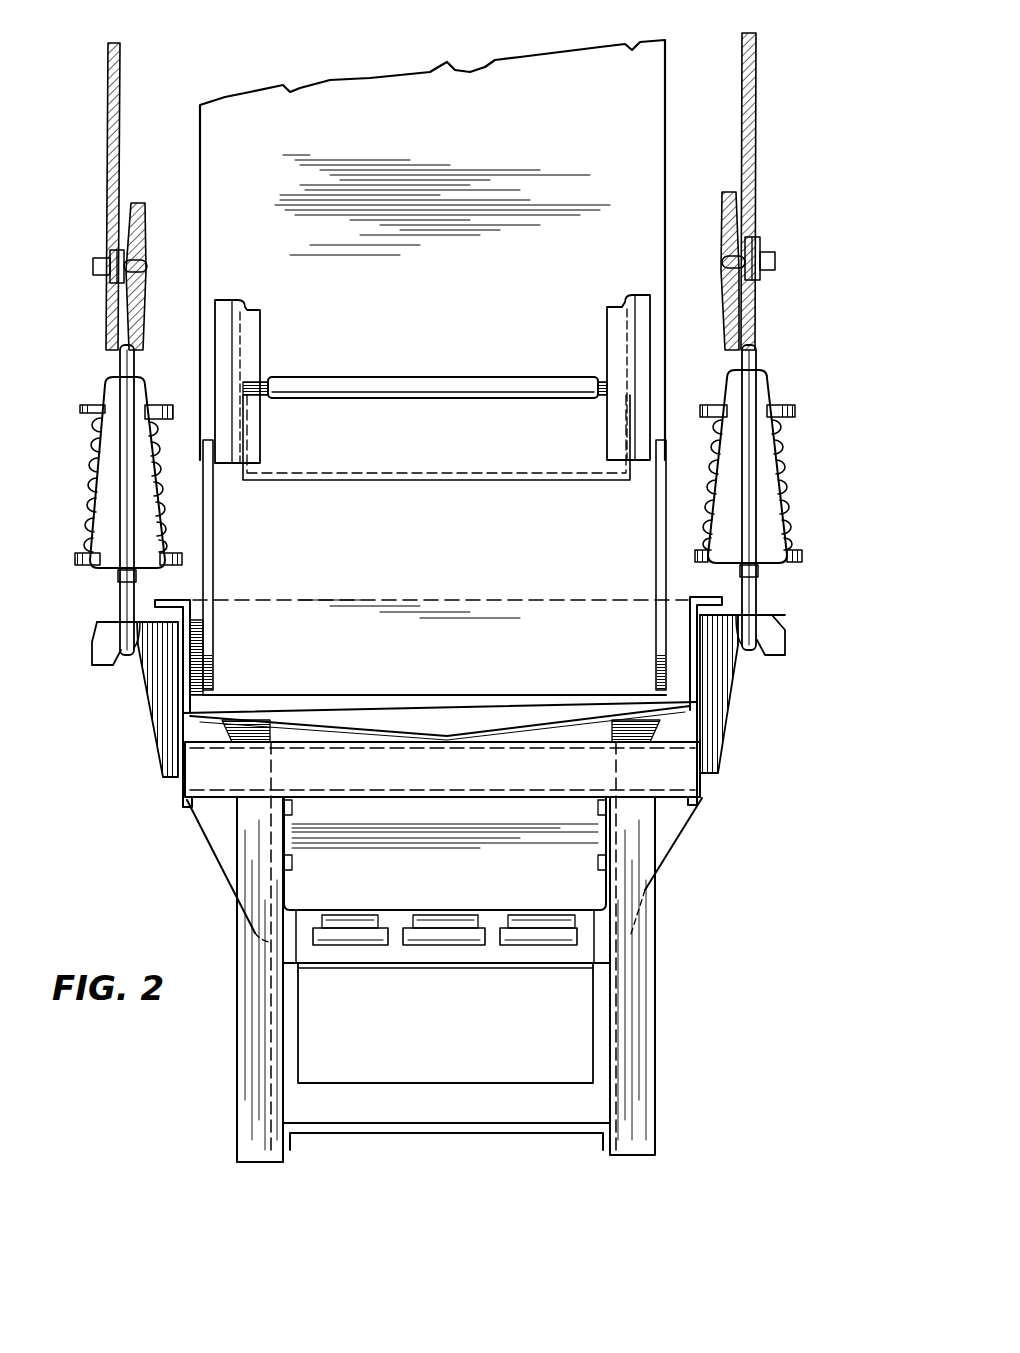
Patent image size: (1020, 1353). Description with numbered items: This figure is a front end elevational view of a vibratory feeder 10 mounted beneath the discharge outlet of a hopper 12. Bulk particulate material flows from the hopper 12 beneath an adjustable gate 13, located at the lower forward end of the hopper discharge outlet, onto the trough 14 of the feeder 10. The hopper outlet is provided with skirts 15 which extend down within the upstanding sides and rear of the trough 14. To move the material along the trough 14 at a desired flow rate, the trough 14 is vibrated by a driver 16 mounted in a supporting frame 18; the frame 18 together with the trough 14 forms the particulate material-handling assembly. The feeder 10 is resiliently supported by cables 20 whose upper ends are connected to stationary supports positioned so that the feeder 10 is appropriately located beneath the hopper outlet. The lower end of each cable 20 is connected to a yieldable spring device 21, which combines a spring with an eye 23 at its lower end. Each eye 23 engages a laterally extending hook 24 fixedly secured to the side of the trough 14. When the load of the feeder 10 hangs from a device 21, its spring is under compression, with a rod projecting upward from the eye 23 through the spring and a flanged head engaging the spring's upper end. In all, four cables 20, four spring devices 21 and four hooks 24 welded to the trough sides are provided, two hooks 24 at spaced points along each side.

The vibratory feeder 10 is at (718, 801).
The hopper 12 is at (666, 287).
The adjustable gate 13 is at (450, 385).
The trough 14 is at (199, 610).
The skirts 15 is at (215, 558).
The driver 16 is at (430, 1057).
The supporting frame 18 is at (642, 1040).
The cable 20 is at (122, 107).
The yieldable spring device 21 is at (107, 405).
The eye 23 is at (127, 612).
The hook 24 is at (157, 685).